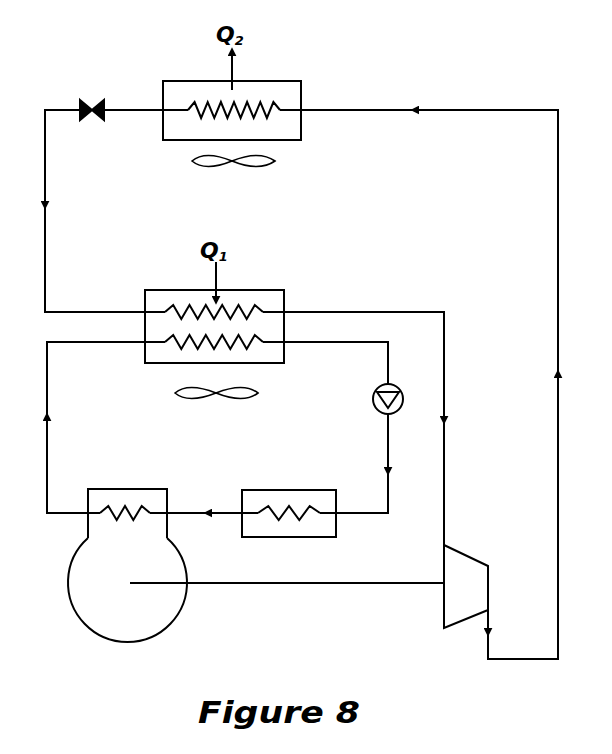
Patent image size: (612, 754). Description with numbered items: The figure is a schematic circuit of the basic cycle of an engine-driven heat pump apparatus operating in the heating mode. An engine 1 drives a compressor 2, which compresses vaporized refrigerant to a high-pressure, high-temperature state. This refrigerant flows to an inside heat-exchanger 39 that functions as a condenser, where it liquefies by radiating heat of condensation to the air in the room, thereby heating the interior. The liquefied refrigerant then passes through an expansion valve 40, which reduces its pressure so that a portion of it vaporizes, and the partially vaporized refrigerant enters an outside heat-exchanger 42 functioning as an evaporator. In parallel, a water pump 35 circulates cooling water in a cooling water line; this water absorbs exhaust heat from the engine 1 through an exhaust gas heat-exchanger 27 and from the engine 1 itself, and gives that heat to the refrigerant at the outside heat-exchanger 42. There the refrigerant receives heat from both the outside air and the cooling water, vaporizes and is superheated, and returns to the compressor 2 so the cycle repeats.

The engine 1 is at (70, 598).
The compressor 2 is at (475, 568).
The exhaust gas heat-exchanger 27 is at (295, 490).
The water pump 35 is at (398, 389).
The inside heat-exchanger 39 is at (302, 92).
The expansion valve 40 is at (105, 104).
The outside heat-exchanger 42 is at (286, 297).